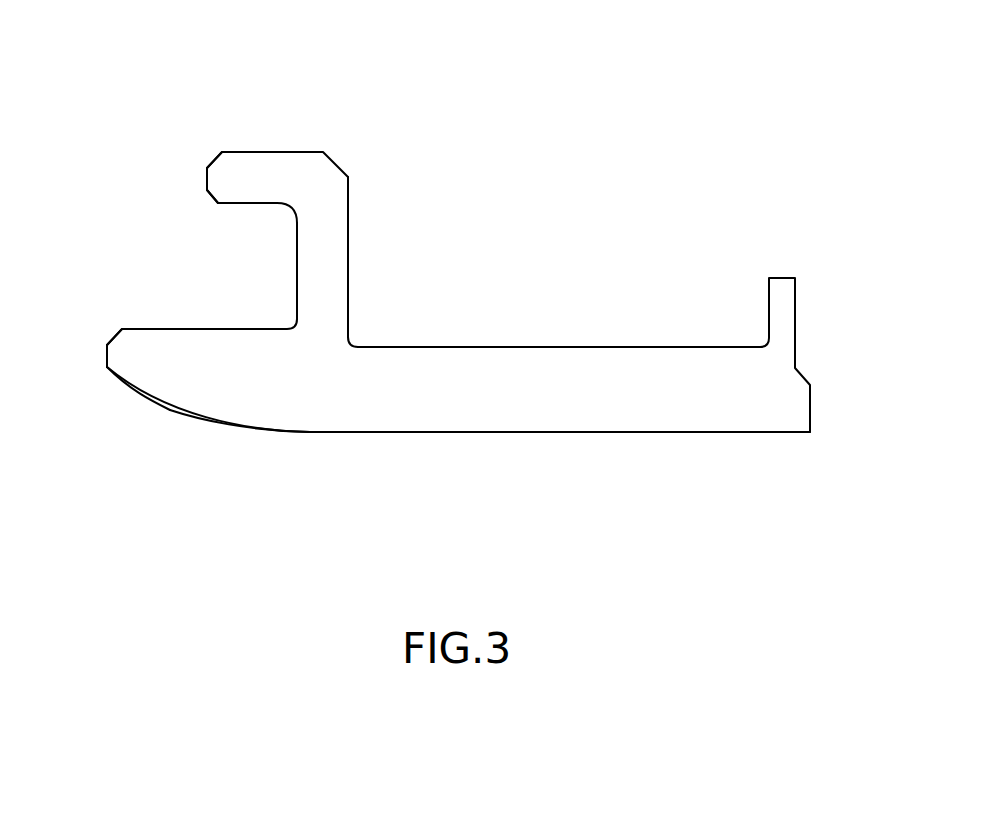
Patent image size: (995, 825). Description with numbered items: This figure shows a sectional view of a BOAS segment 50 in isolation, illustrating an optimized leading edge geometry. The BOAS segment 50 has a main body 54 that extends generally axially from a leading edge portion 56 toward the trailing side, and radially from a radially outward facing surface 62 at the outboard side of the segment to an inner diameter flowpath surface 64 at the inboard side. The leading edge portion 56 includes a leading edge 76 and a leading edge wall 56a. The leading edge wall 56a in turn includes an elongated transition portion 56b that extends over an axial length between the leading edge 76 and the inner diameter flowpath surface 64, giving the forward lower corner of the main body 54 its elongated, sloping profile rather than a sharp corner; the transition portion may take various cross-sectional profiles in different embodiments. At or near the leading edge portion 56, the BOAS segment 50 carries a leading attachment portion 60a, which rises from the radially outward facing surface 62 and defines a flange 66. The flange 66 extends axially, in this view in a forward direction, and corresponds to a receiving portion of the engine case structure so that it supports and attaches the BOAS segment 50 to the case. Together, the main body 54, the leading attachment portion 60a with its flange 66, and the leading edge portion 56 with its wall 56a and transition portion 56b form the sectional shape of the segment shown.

The BOAS segment 50 is at (661, 96).
The main body 54 is at (544, 399).
The leading edge portion 56 is at (98, 366).
The leading edge wall 56a is at (141, 402).
The elongated transition portion 56b is at (218, 418).
The leading attachment portion 60a is at (333, 245).
The radially outward facing surface 62 is at (513, 346).
The inner diameter flowpath surface 64 is at (687, 433).
The flange 66 is at (233, 182).
The leading edge 76 is at (107, 355).